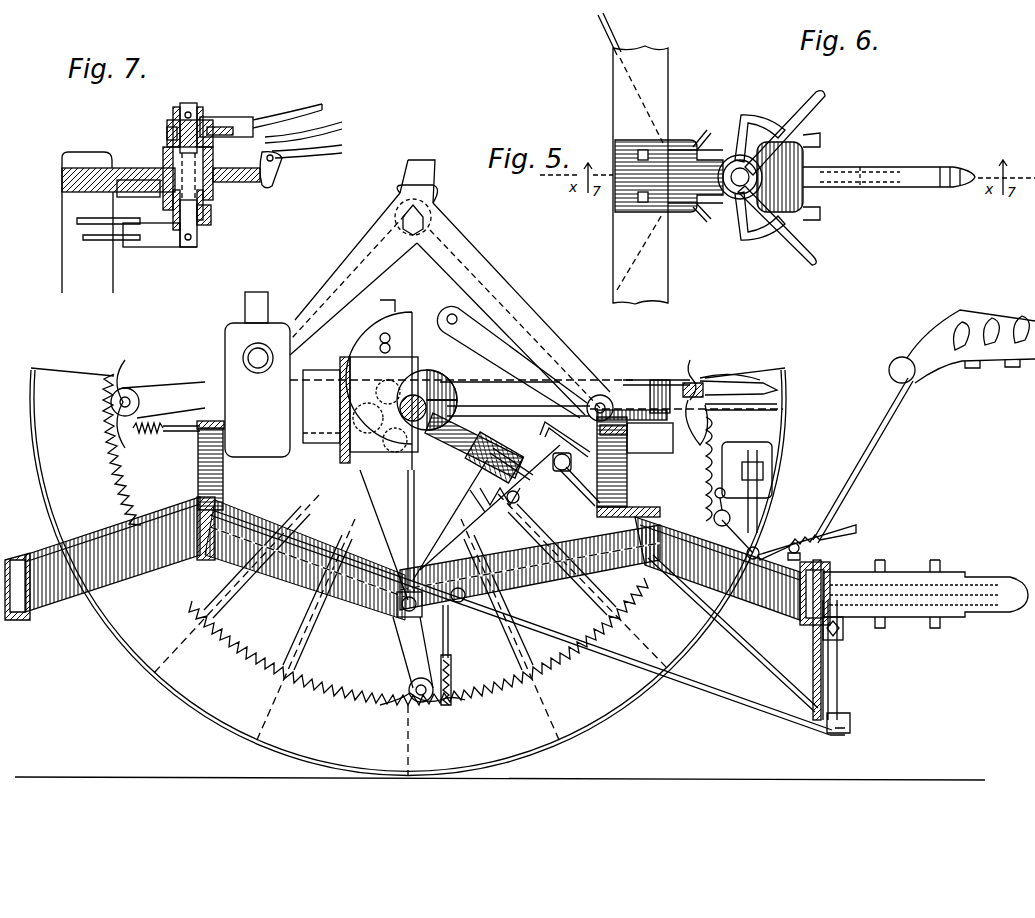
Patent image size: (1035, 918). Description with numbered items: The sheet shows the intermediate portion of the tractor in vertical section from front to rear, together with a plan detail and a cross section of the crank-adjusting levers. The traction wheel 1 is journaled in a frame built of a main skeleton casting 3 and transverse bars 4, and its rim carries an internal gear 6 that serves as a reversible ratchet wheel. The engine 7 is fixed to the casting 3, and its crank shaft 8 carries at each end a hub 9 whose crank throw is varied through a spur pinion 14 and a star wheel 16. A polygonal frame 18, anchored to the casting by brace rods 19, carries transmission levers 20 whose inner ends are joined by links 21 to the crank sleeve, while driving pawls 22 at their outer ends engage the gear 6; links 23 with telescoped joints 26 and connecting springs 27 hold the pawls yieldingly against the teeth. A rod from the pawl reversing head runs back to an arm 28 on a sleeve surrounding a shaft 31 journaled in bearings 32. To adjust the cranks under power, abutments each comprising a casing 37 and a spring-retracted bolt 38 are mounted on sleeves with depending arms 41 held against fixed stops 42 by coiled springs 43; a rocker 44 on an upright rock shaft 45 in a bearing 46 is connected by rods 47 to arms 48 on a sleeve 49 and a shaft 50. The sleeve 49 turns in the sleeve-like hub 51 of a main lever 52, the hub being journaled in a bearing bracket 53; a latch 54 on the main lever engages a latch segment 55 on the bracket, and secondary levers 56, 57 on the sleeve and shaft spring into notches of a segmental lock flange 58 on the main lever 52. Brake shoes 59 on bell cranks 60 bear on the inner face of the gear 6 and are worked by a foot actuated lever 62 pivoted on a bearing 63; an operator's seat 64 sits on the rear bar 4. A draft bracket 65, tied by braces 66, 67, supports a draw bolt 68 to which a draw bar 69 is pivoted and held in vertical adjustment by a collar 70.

In FIG. 5, the traction wheel 1 is at (45, 468).
In FIG. 5, the main skeleton casting 3 is at (118, 568).
In FIG. 5, the transverse bar 4 is at (12, 556).
In FIG. 5, the internal gear 6 is at (212, 628).
In FIG. 5, the engine 7 is at (375, 355).
In FIG. 5, the crank shaft 8 is at (405, 385).
In FIG. 5, the hub 9 is at (432, 378).
In FIG. 5, the spur pinion 14 is at (445, 396).
In FIG. 5, the star wheel 16 is at (390, 425).
In FIG. 5, the polygonal frame 18 is at (345, 245).
In FIG. 5, the brace rod 19 is at (312, 560).
In FIG. 5, the transmission lever 20 is at (437, 185).
In FIG. 5, the link 21 is at (432, 348).
In FIG. 5, the driving pawl 22 is at (126, 362).
In FIG. 5, the link 23 is at (182, 432).
In FIG. 5, the telescoped joint 26 is at (452, 655).
In FIG. 5, the connecting spring 27 is at (143, 435).
In FIG. 5, the arm 28 is at (748, 480).
In FIG. 5, the shaft 31 is at (730, 507).
In FIG. 5, the bearing 32 is at (698, 469).
In FIG. 5, the casing 37 is at (497, 425).
In FIG. 5, the bolt 38 is at (468, 418).
In FIG. 5, the depending arm 41 is at (460, 522).
In FIG. 5, the fixed stop 42 is at (498, 510).
In FIG. 5, the coiled spring 43 is at (480, 515).
In FIG. 5, the rocker 44 is at (522, 474).
In FIG. 5, the rock shaft 45 is at (540, 430).
In FIG. 5, the bearing 46 is at (524, 504).
In FIG. 6, the rod 47 is at (612, 43).
In FIG. 5, the rod 47 is at (576, 466).
In FIG. 7, the arm 48 is at (145, 214).
In FIG. 6, the arm 48 is at (703, 145).
In FIG. 5, the arm 48 is at (658, 455).
In FIG. 7, the sleeve 49 is at (208, 200).
In FIG. 7, the shaft 50 is at (188, 250).
In FIG. 7, the sleeve-like hub 51 is at (165, 170).
In FIG. 7, the main lever 52 is at (342, 124).
In FIG. 6, the main lever 52 is at (918, 159).
In FIG. 5, the main lever 52 is at (775, 388).
In FIG. 7, the bearing bracket 53 is at (112, 166).
In FIG. 6, the bearing bracket 53 is at (627, 187).
In FIG. 5, the bearing bracket 53 is at (660, 383).
In FIG. 7, the latch 54 is at (310, 155).
In FIG. 5, the latch 54 is at (790, 408).
In FIG. 7, the latch segment 55 is at (260, 185).
In FIG. 6, the latch segment 55 is at (820, 200).
In FIG. 7, the secondary lever 56 is at (230, 126).
In FIG. 6, the secondary lever 56 is at (800, 240).
In FIG. 5, the secondary lever 56 is at (712, 372).
In FIG. 7, the secondary lever 57 is at (275, 120).
In FIG. 6, the secondary lever 57 is at (824, 98).
In FIG. 5, the secondary lever 57 is at (688, 370).
In FIG. 7, the segmental lock flange 58 is at (303, 129).
In FIG. 6, the segmental lock flange 58 is at (767, 125).
In FIG. 5, the segmental lock flange 58 is at (735, 378).
In FIG. 5, the brake shoe 59 is at (762, 455).
In FIG. 5, the bell crank 60 is at (770, 527).
In FIG. 5, the foot actuated lever 62 is at (858, 528).
In FIG. 5, the bearing 63 is at (808, 552).
In FIG. 5, the operator's seat 64 is at (962, 375).
In FIG. 5, the draft bracket 65 is at (822, 657).
In FIG. 5, the brace 66 is at (763, 655).
In FIG. 5, the brace 67 is at (722, 700).
In FIG. 5, the draw bolt 68 is at (840, 690).
In FIG. 5, the draw bar 69 is at (950, 595).
In FIG. 5, the collar 70 is at (845, 634).